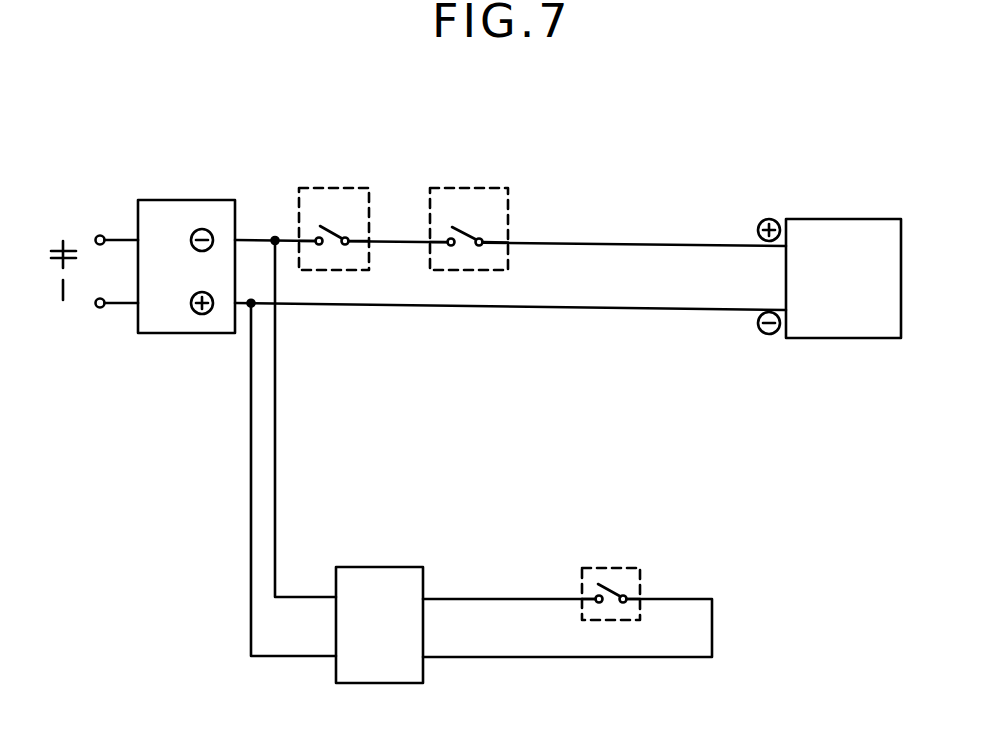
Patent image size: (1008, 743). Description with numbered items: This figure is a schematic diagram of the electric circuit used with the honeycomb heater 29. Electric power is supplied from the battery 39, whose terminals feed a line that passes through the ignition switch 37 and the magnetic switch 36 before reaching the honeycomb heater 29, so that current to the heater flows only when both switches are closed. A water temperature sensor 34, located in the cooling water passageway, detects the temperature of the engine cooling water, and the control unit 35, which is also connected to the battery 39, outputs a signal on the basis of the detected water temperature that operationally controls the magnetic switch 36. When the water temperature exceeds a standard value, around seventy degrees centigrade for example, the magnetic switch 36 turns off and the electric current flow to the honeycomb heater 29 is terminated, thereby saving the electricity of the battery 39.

The battery 39 is at (192, 212).
The ignition switch 37 is at (332, 193).
The magnetic switch 36 is at (473, 193).
The honeycomb heater 29 is at (833, 225).
The control unit 35 is at (384, 575).
The water temperature sensor 34 is at (622, 570).